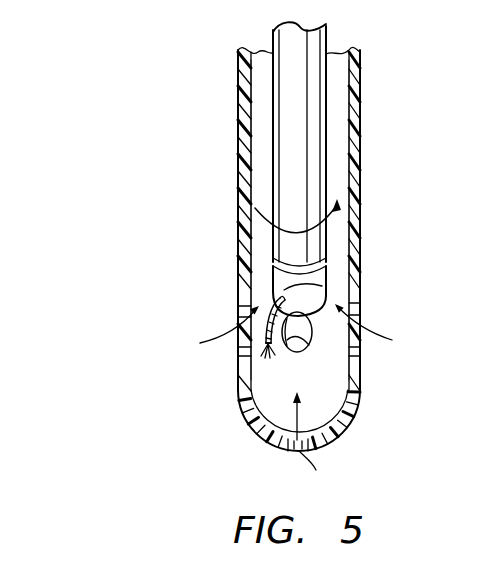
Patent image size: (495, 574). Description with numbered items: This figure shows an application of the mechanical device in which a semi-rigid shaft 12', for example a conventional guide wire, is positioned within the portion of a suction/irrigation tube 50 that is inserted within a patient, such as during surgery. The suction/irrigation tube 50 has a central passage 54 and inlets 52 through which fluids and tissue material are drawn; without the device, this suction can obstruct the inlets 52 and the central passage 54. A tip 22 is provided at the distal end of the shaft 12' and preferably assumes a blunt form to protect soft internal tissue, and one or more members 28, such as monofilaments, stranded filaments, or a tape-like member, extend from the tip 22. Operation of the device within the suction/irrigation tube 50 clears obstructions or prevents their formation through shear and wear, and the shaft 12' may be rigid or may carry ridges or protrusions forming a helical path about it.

The suction/irrigation tube 50 is at (361, 80).
The central passage 54 is at (335, 139).
The semi-rigid shaft 12' is at (265, 169).
The tip 22 is at (258, 283).
The members 28 is at (268, 350).
The inlets 52 is at (244, 318).